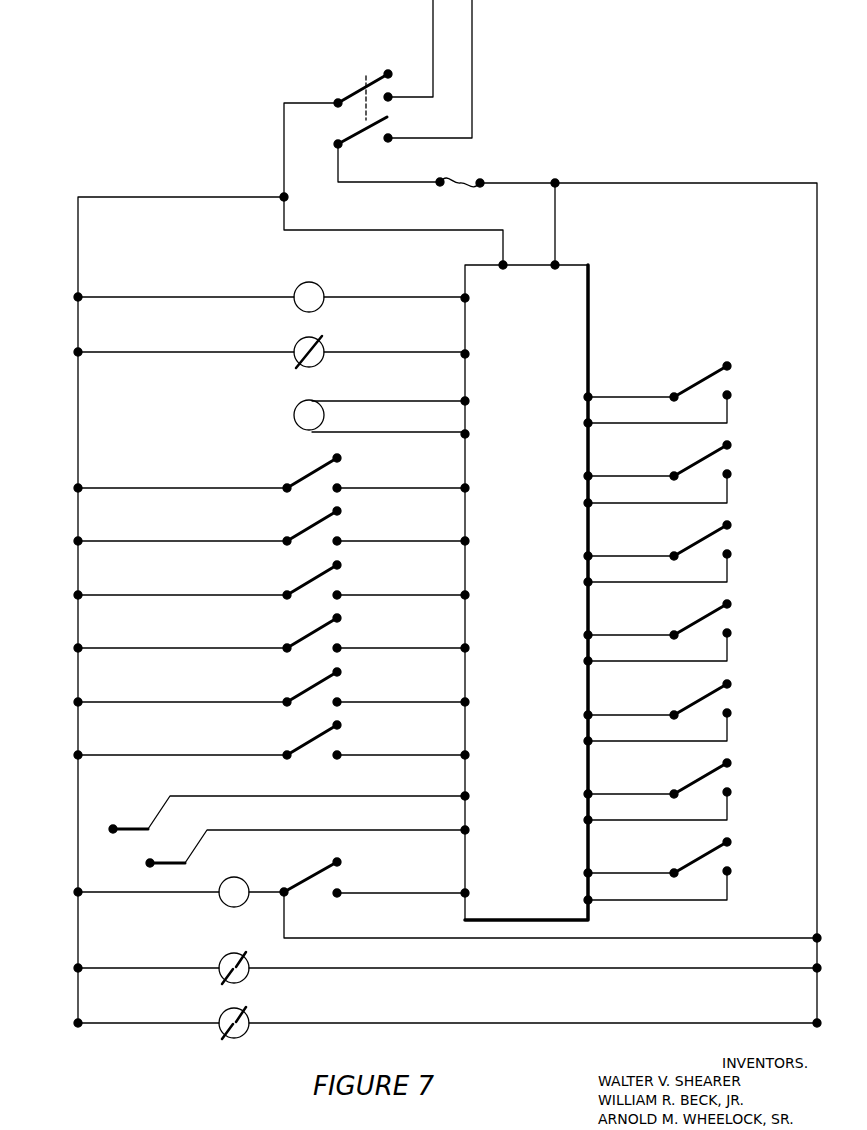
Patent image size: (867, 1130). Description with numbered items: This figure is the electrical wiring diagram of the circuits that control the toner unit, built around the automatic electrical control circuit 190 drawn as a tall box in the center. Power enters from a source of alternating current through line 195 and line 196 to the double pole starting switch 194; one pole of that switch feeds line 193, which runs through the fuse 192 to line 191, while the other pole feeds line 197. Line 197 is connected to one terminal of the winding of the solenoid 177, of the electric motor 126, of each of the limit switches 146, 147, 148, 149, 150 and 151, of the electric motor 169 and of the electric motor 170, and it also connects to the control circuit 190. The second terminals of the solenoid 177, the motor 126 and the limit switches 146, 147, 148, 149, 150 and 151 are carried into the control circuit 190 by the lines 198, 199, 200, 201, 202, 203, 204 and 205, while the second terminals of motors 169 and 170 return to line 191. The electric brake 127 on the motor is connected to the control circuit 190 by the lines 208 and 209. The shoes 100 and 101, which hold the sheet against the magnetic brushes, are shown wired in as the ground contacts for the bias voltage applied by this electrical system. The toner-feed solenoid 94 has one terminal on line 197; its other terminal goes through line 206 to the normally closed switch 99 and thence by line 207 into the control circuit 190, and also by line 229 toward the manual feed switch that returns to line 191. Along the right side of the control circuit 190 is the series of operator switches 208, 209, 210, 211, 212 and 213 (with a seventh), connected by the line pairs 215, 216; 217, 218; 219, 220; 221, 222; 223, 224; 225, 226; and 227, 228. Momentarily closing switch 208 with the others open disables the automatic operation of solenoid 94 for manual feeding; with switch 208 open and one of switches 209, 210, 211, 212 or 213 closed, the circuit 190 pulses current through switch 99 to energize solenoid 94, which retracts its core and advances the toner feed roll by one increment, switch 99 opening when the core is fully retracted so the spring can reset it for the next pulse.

The solenoid 94 is at (228, 906).
The switch 99 is at (318, 874).
The shoe 100 is at (146, 826).
The shoe 101 is at (170, 863).
The electric motor 126 is at (296, 345).
The electric brake 127 is at (296, 406).
The limit switch 146 is at (300, 478).
The limit switch 147 is at (300, 531).
The limit switch 148 is at (300, 585).
The limit switch 149 is at (300, 638).
The limit switch 150 is at (300, 692).
The limit switch 151 is at (300, 745).
The electric motor 169 is at (222, 962).
The electric motor 170 is at (222, 1017).
The solenoid 177 is at (296, 290).
The automatic electrical control circuit 190 is at (537, 342).
The electrical line 191 is at (708, 183).
The fuse 192 is at (465, 180).
The electrical line 193 is at (417, 182).
The double pole starting switch 194 is at (362, 90).
The electrical line 195 is at (472, 17).
The electrical line 196 is at (433, 16).
The electrical line 197 is at (194, 197).
The electrical line 198 is at (432, 298).
The electrical line 199 is at (432, 354).
The electrical line 200 is at (432, 488).
The electrical line 201 is at (432, 541).
The electrical line 202 is at (432, 595).
The electrical line 203 is at (432, 648).
The electrical line 204 is at (432, 702).
The electrical line 205 is at (432, 755).
The electrical line 206 is at (432, 401).
The electrical line 207 is at (432, 434).
The switch 208 is at (432, 796).
The switch 209 is at (432, 830).
The switch 210 is at (702, 539).
The switch 211 is at (702, 618).
The switch 212 is at (702, 698).
The switch 213 is at (702, 777).
The electrical line 215 is at (656, 396).
The electrical line 216 is at (728, 410).
The electrical line 217 is at (656, 475).
The electrical line 218 is at (728, 489).
The electrical line 219 is at (656, 555).
The electrical line 220 is at (728, 569).
The electrical line 221 is at (656, 634).
The electrical line 222 is at (728, 648).
The electrical line 223 is at (656, 714).
The electrical line 224 is at (728, 728).
The electrical line 225 is at (656, 793).
The electrical line 226 is at (728, 807).
The electrical line 227 is at (656, 872).
The electrical line 228 is at (728, 887).
The electrical line 229 is at (390, 938).